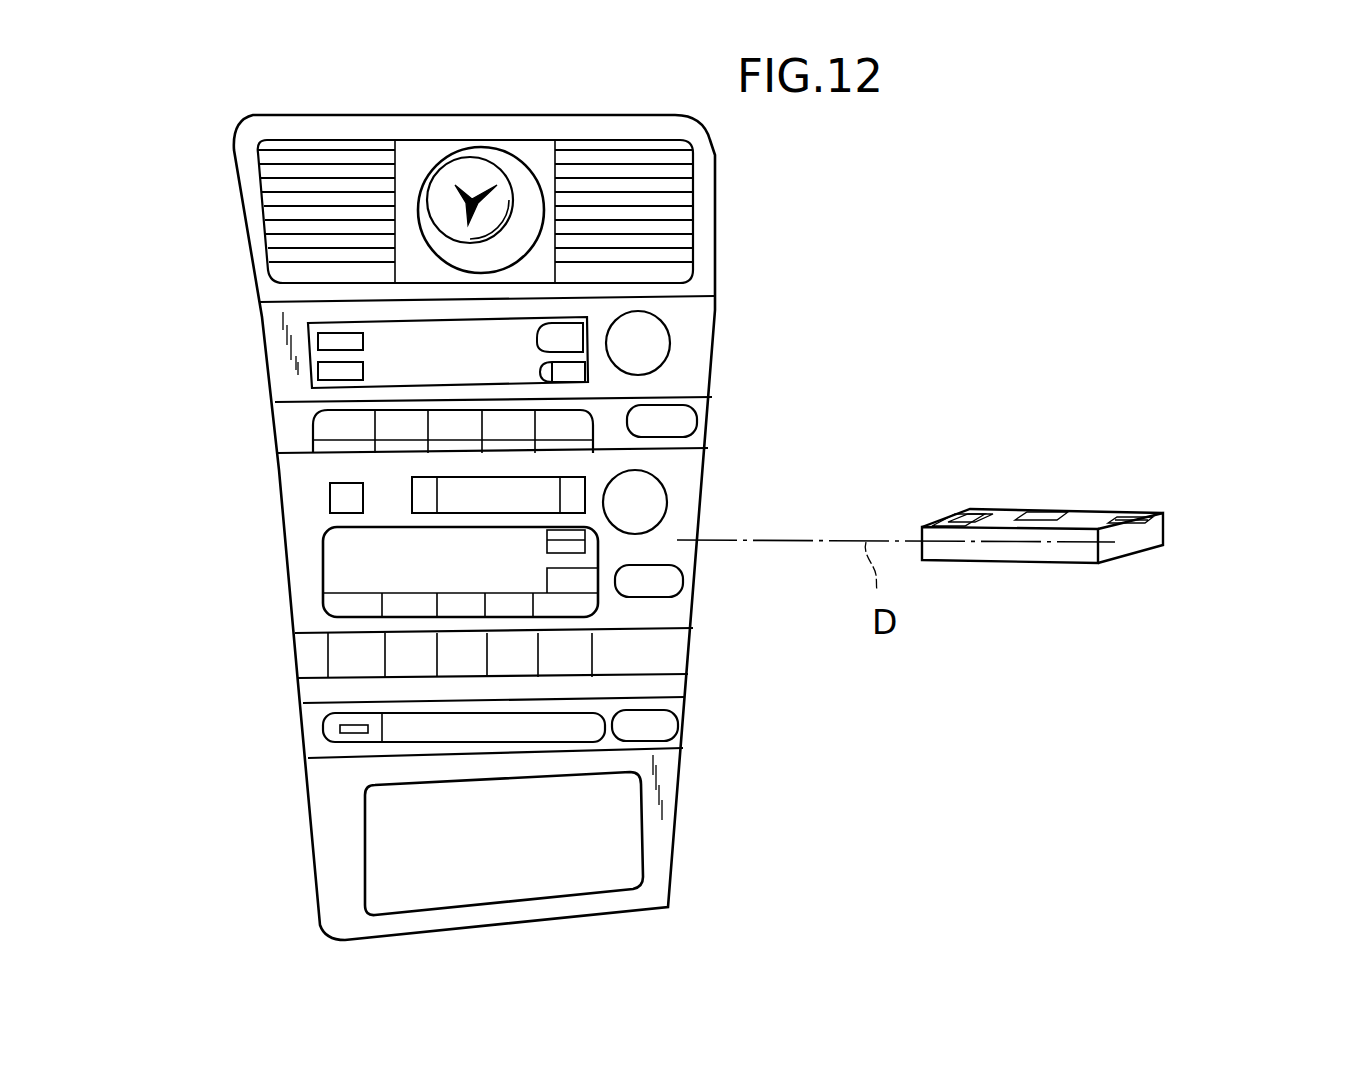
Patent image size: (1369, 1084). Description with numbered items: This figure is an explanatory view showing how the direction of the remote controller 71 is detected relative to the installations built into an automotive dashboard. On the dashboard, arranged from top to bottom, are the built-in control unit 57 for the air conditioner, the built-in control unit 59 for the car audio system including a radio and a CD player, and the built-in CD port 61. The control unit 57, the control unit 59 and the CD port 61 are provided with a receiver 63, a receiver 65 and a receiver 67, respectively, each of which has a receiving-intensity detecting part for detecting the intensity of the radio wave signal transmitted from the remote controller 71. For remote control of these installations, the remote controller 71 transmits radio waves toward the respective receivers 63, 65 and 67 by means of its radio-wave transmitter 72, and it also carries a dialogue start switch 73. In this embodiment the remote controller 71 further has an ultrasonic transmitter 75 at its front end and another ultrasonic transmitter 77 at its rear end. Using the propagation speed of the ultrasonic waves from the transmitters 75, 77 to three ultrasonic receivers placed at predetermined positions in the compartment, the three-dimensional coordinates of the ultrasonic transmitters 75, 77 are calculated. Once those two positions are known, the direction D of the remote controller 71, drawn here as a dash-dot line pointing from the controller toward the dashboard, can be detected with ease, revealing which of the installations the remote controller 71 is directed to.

The control unit for air conditioner 57 is at (697, 317).
The control unit for car audio system 59 is at (690, 468).
The CD port 61 is at (577, 725).
The receiver 63 is at (697, 417).
The receiver 65 is at (683, 576).
The receiver 67 is at (667, 727).
The remote controller 71 is at (1033, 464).
The radio-wave transmitter 72 is at (952, 522).
The dialogue start switch 73 is at (1050, 507).
The ultrasonic transmitter 75 is at (983, 508).
The ultrasonic transmitter 77 is at (1136, 474).